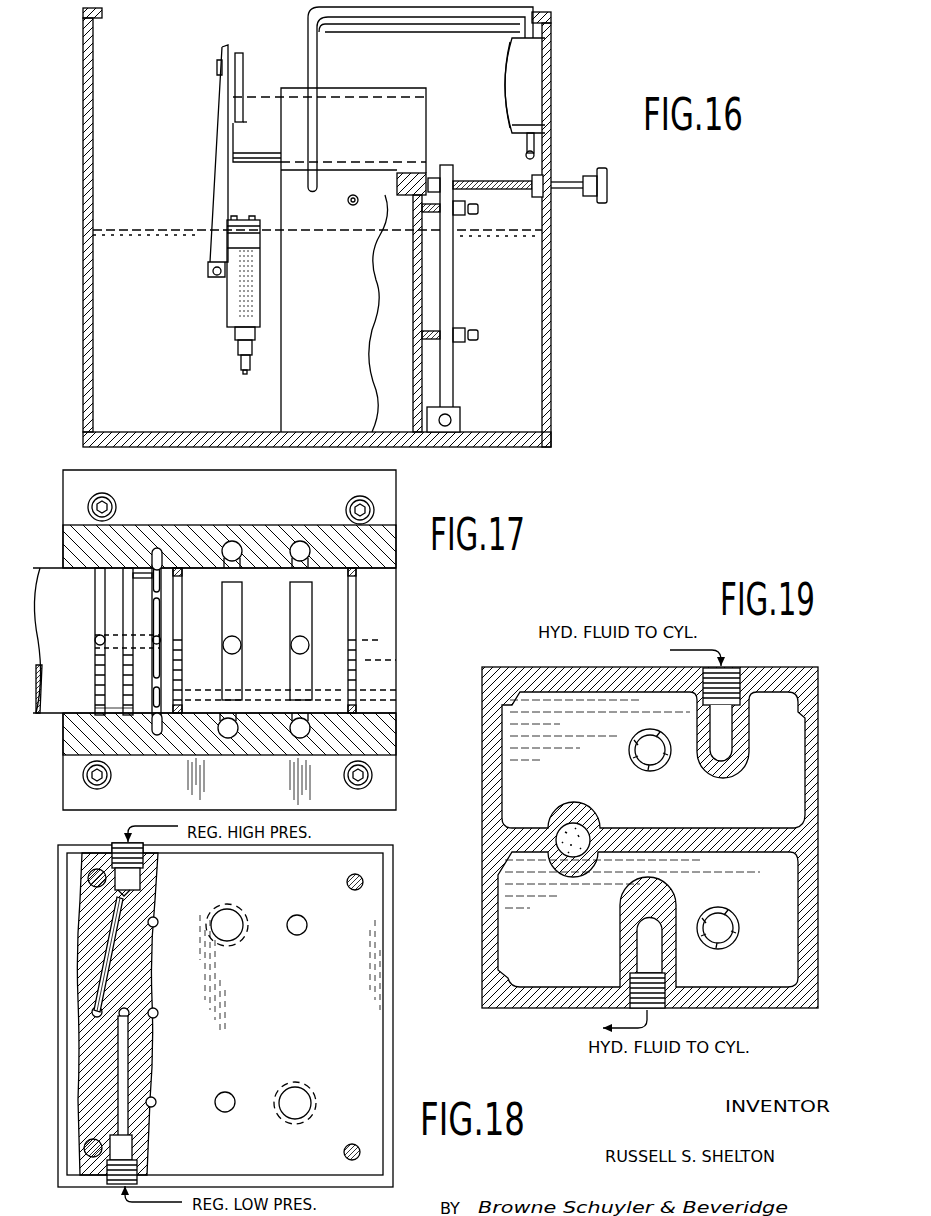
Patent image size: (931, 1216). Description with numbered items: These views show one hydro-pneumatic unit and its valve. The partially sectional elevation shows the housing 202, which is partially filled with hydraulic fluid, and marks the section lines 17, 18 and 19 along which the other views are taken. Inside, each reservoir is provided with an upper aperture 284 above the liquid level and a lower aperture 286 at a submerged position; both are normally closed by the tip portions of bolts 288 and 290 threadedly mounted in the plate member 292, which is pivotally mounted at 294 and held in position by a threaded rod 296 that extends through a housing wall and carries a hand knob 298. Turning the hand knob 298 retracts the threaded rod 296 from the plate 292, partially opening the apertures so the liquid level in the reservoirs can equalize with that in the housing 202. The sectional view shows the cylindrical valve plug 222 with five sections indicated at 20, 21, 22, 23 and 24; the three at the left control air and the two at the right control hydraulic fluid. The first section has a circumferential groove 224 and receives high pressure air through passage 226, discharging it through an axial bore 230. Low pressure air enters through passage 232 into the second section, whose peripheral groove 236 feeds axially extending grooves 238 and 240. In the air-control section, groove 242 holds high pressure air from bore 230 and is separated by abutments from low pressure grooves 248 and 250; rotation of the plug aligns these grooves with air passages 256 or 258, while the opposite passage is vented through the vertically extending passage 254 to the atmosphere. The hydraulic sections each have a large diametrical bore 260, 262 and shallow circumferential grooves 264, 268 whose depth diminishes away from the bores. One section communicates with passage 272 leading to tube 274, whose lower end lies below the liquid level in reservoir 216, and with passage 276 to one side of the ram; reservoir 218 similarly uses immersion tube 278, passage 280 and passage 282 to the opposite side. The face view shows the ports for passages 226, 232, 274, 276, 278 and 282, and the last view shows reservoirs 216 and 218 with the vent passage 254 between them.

In FIG. 16, the section line 17— 17 is at (292, 128).
In FIG. 16, the section line 18— 18 is at (272, 168).
In FIG. 16, the section line 19— 19 is at (292, 198).
In FIG. 17, the first valve plug section 20 is at (100, 483).
In FIG. 17, the second valve plug section 21 is at (130, 483).
In FIG. 17, the third valve plug section 22 is at (158, 483).
In FIG. 17, the fourth valve plug section 23 is at (232, 483).
In FIG. 17, the fifth valve plug section 24 is at (304, 483).
In FIG. 16, the housing 202 is at (551, 262).
In FIG. 19, the reservoir 216 is at (583, 787).
In FIG. 19, the reservoir 218 is at (558, 921).
In FIG. 17, the valve plug 222 is at (385, 650).
In FIG. 17, the groove 224 is at (97, 598).
In FIG. 18, the passage 226 is at (108, 950).
In FIG. 17, the axial bore 230 is at (110, 634).
In FIG. 18, the passage 232 is at (126, 1073).
In FIG. 17, the groove 236 is at (126, 652).
In FIG. 17, the axial groove 238 is at (130, 577).
In FIG. 17, the axial groove 240 is at (145, 703).
In FIG. 17, the groove 242 is at (160, 620).
In FIG. 17, the low pressure groove 248 is at (160, 580).
In FIG. 17, the low pressure groove 250 is at (161, 697).
In FIG. 19, the vertically extending passage 254 is at (580, 860).
In FIG. 17, the air passage 256 is at (157, 548).
In FIG. 17, the air passage 258 is at (155, 740).
In FIG. 17, the diametrical bore 260 is at (233, 646).
In FIG. 17, the diametrical bore 262 is at (301, 646).
In FIG. 17, the circumferential groove 264 is at (233, 620).
In FIG. 17, the circumferential groove 268 is at (301, 620).
In FIG. 17, the passage 272 is at (232, 541).
In FIG. 18, the tube 274 is at (232, 930).
In FIG. 19, the tube 274 is at (670, 765).
In FIG. 17, the passage 276 is at (226, 738).
In FIG. 18, the passage 276 is at (225, 1100).
In FIG. 18, the immersion tube 278 is at (300, 1098).
In FIG. 19, the immersion tube 278 is at (740, 926).
In FIG. 17, the passage 280 is at (300, 738).
In FIG. 17, the passage 282 is at (300, 541).
In FIG. 18, the passage 282 is at (297, 934).
In FIG. 16, the upper aperture 284 is at (412, 207).
In FIG. 16, the lower aperture 286 is at (418, 336).
In FIG. 16, the bolt 288 is at (462, 216).
In FIG. 16, the bolt 290 is at (472, 342).
In FIG. 16, the plate member 292 is at (447, 287).
In FIG. 16, the pivot 294 is at (456, 410).
In FIG. 16, the threaded rod 296 is at (500, 185).
In FIG. 16, the hand knob 298 is at (606, 190).